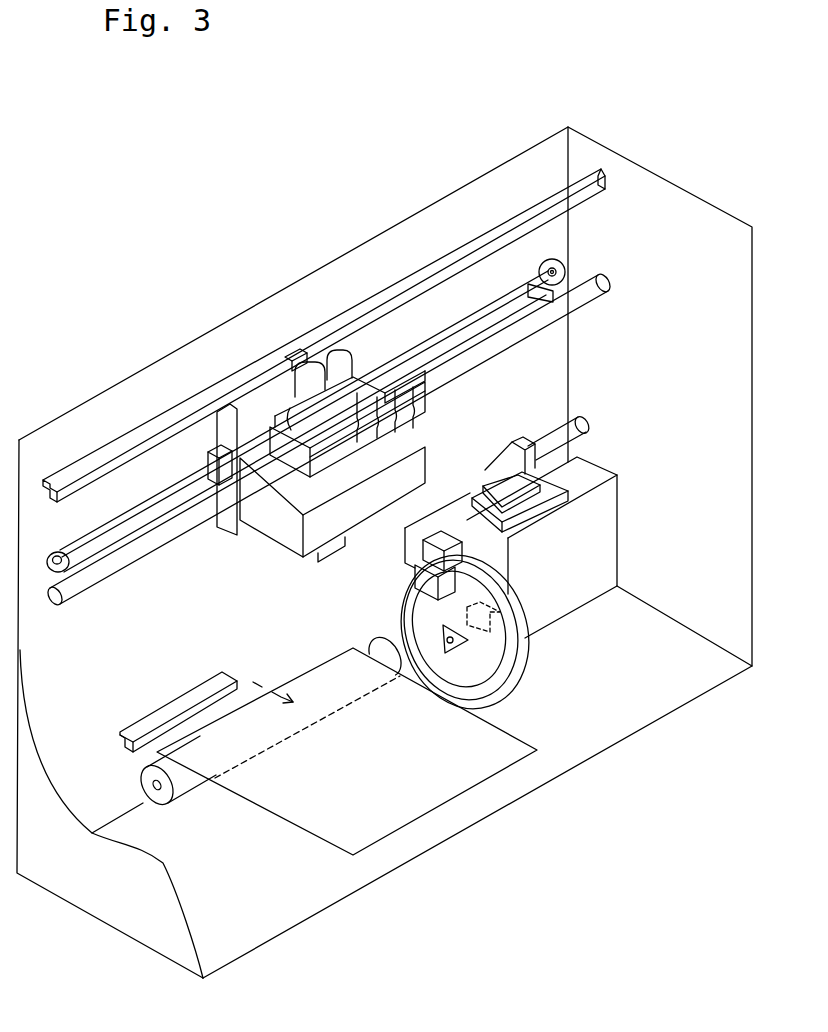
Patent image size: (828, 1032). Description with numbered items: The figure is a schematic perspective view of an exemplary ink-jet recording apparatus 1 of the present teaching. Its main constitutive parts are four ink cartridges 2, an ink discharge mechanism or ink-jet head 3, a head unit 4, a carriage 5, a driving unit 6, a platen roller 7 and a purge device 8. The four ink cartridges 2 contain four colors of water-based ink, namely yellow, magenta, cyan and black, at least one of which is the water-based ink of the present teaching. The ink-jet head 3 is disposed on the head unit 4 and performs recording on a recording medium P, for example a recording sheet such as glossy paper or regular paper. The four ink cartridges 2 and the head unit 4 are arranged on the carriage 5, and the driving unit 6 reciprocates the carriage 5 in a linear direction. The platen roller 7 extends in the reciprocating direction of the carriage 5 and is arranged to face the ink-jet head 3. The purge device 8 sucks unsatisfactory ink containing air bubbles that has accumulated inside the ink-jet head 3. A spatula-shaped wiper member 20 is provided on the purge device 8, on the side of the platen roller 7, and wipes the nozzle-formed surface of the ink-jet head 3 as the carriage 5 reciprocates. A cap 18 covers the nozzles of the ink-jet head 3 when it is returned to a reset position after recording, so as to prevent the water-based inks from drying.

The ink-jet recording apparatus 1 is at (295, 159).
The ink cartridges 2 is at (348, 373).
The ink discharge mechanism (ink-jet head) 3 is at (372, 526).
The head unit 4 is at (350, 553).
The carriage 5 is at (227, 424).
The driving unit 6 is at (590, 153).
The platen roller 7 is at (190, 777).
The purge device 8 is at (528, 742).
The cap 18 is at (567, 472).
The wiper member 20 is at (440, 562).
The recording medium P is at (340, 830).